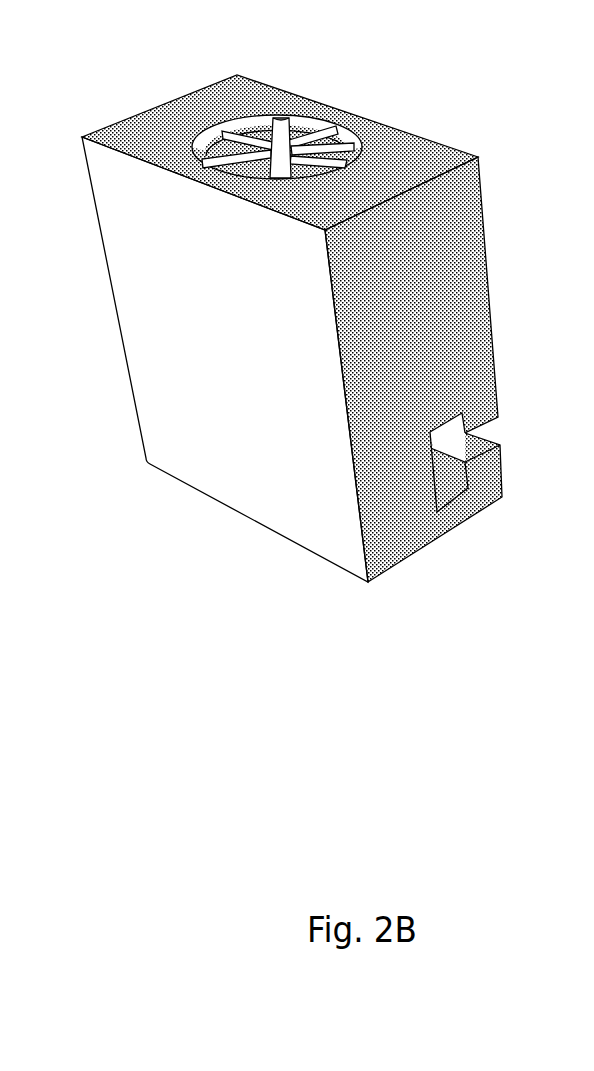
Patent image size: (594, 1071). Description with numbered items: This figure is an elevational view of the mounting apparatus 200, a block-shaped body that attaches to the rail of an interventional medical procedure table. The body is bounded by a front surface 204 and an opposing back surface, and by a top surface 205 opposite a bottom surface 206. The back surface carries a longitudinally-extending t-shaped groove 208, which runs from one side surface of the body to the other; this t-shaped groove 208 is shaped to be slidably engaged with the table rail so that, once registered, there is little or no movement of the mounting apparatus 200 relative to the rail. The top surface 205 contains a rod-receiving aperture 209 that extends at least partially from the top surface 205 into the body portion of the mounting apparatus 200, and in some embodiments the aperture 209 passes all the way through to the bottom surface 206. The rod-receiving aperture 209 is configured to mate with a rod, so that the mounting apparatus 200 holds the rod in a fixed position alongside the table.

The mounting apparatus 200 is at (388, 740).
The front surface 204 is at (226, 460).
The top surface 205 is at (419, 148).
The bottom surface 206 is at (308, 558).
The t-shaped groove 208 is at (444, 474).
The rod-receiving aperture 209 is at (275, 131).